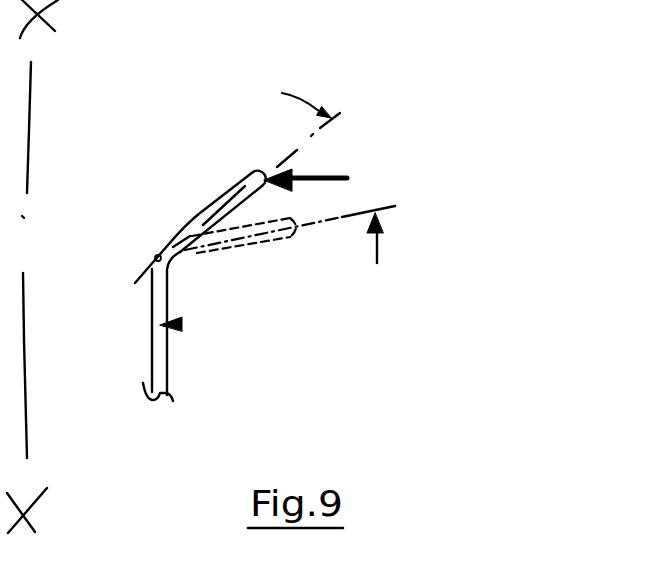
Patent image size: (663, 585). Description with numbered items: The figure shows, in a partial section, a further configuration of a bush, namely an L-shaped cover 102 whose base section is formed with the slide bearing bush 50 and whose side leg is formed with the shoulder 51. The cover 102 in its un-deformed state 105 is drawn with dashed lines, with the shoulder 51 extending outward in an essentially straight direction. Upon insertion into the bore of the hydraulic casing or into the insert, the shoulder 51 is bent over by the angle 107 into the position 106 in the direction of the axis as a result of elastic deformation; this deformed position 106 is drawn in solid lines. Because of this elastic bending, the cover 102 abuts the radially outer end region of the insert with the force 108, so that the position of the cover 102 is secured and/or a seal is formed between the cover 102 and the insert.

The slide bearing bush 50 is at (165, 358).
The shoulder 51 is at (203, 212).
The cover 102 is at (182, 322).
The un-deformed state 105 is at (322, 222).
The position 106 is at (337, 125).
The angle 107 is at (403, 250).
The force 108 is at (322, 168).